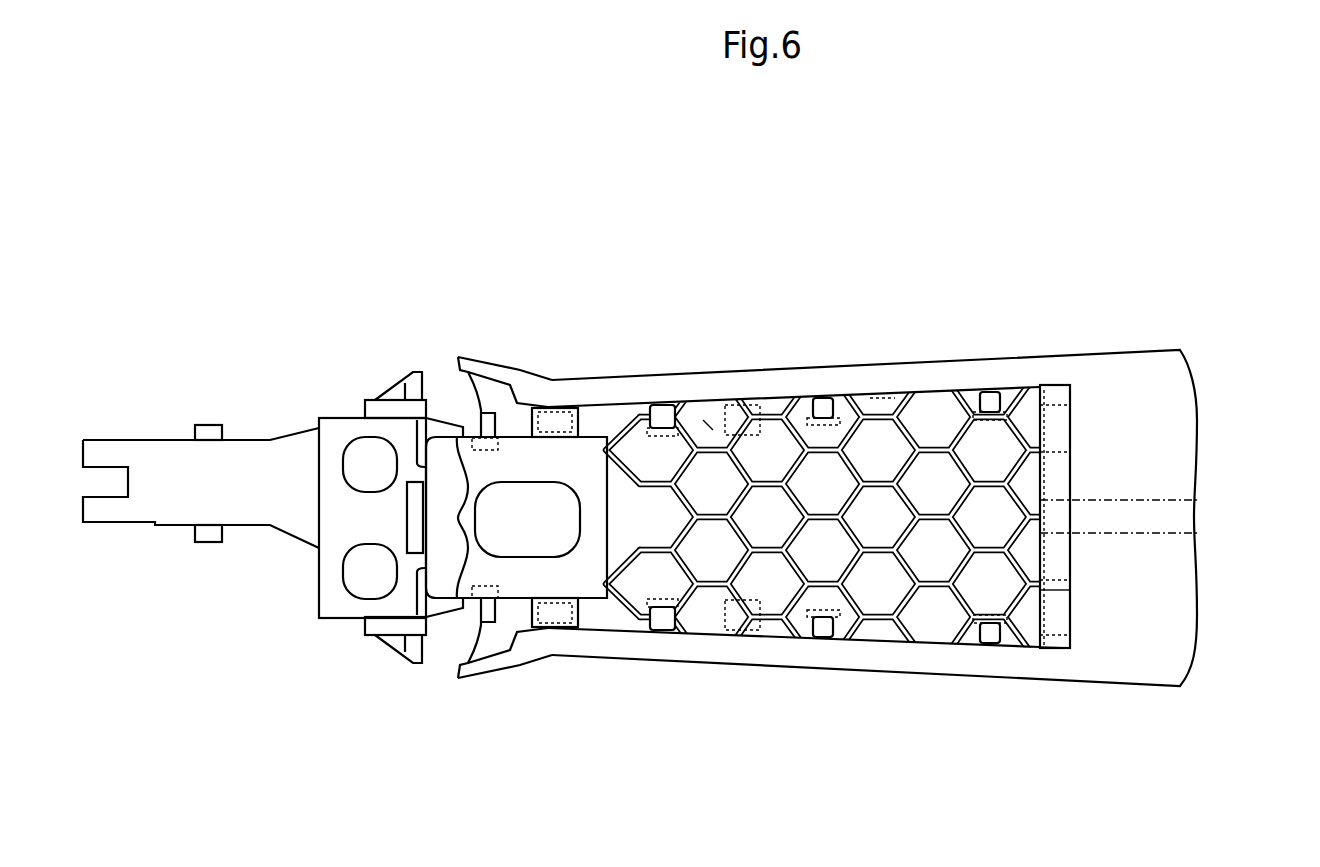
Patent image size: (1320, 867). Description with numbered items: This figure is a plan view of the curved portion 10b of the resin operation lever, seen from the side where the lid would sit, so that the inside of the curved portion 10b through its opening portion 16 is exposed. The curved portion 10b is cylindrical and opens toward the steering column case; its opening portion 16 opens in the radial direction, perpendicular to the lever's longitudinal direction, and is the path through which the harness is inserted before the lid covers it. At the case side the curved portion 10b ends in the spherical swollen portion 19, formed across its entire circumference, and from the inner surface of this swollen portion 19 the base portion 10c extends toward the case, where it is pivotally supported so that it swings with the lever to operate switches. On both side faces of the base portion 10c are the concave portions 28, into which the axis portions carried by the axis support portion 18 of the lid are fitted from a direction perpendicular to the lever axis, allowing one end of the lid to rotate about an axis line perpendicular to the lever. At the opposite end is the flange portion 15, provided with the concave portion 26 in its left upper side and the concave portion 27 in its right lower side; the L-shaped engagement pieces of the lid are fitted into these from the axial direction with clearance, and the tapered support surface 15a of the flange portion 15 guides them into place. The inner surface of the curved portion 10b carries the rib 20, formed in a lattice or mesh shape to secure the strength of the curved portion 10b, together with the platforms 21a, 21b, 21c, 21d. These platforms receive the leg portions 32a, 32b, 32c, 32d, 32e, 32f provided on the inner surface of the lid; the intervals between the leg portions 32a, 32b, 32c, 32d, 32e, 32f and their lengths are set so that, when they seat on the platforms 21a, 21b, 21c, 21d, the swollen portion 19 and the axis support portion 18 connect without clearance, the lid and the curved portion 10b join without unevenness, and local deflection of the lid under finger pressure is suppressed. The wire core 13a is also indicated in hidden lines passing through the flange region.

The curved portion 10b is at (917, 660).
The base portion 10c is at (163, 457).
The electric wire core 13a is at (1150, 533).
The flange portion 15 is at (1067, 650).
The support surface 15a is at (1072, 422).
The opening portion 16 is at (607, 600).
The axis support portion 18 is at (476, 355).
The swollen portion 19 is at (703, 417).
The rib 20 is at (908, 407).
The platform 21a is at (587, 417).
The platform 21b is at (657, 417).
The platform 21c is at (815, 407).
The platform 21d is at (988, 407).
The concave portion 26 is at (1053, 393).
The concave portion 27 is at (1058, 580).
The concave portion 28 is at (477, 435).
The leg portion 32a is at (553, 415).
The leg portion 32b is at (638, 417).
The leg portion 32c is at (745, 417).
The leg portion 32d is at (848, 397).
The leg portion 32e is at (882, 397).
The leg portion 32f is at (963, 397).